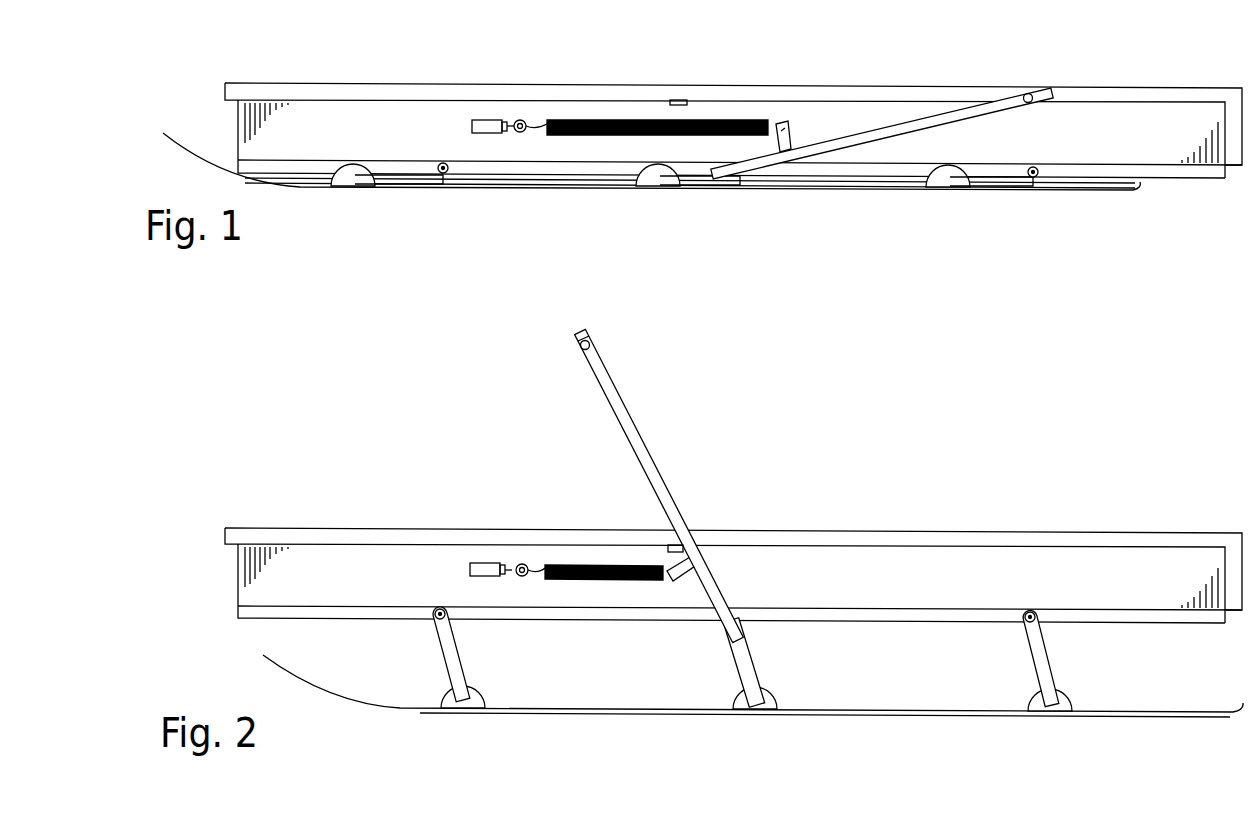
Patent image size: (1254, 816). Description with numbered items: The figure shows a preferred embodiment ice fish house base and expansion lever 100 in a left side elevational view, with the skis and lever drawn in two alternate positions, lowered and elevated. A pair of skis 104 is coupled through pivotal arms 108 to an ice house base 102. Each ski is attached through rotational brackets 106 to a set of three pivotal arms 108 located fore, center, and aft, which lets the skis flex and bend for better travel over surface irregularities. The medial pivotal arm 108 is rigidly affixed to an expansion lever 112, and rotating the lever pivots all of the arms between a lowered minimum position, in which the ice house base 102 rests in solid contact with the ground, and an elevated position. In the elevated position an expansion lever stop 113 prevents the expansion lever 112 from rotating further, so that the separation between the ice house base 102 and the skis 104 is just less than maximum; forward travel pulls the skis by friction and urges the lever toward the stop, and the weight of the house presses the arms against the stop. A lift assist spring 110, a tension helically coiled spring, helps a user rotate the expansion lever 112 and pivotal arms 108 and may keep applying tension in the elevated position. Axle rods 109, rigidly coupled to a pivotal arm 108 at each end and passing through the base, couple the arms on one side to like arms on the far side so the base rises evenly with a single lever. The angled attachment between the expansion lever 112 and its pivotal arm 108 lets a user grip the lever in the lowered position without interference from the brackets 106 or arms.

In FIG. 1, the ice fish house base and expansion lever 100 is at (969, 68).
In FIG. 2, the ice fish house base and expansion lever 100 is at (962, 486).
In FIG. 1, the ice house base 102 is at (398, 79).
In FIG. 2, the ice house base 102 is at (435, 523).
In FIG. 1, the skis 104 is at (772, 197).
In FIG. 2, the skis 104 is at (933, 721).
In FIG. 1, the rotational brackets 106 is at (656, 184).
In FIG. 2, the rotational brackets 106 is at (745, 699).
In FIG. 1, the pivotal arms 108 is at (446, 181).
In FIG. 2, the pivotal arms 108 is at (448, 665).
In FIG. 1, the axle rods 109 is at (443, 163).
In FIG. 2, the axle rods 109 is at (440, 609).
In FIG. 1, the lift assist spring 110 is at (597, 118).
In FIG. 2, the lift assist spring 110 is at (555, 565).
In FIG. 1, the expansion lever 112 is at (957, 111).
In FIG. 2, the expansion lever 112 is at (648, 455).
In FIG. 1, the expansion lever stop 113 is at (686, 100).
In FIG. 2, the expansion lever stop 113 is at (672, 545).